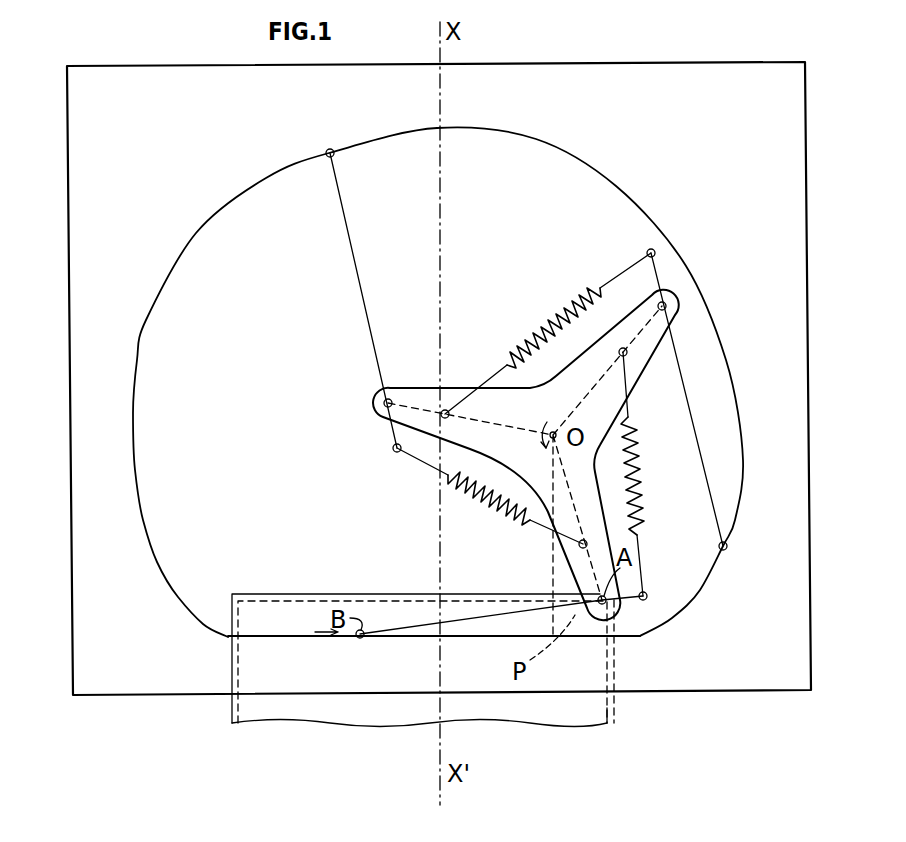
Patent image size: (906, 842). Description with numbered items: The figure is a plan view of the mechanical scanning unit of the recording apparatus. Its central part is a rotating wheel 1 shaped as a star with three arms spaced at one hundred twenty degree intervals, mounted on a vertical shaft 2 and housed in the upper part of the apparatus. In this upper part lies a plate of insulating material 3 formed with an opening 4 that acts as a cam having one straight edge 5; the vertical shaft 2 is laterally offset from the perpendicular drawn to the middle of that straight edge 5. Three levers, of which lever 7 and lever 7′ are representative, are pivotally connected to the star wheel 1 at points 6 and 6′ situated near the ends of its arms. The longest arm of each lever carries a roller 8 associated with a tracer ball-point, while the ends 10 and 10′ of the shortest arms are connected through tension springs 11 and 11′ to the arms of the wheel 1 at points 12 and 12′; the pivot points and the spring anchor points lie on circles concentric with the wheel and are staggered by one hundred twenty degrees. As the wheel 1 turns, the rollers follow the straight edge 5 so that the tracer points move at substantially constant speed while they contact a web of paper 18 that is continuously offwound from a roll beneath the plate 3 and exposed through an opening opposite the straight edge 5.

The rotating wheel 1 is at (615, 400).
The vertical shaft 2 is at (552, 428).
The plate of insulating material 3 is at (148, 670).
The opening 4 is at (150, 485).
The straight edge 5 is at (265, 638).
The pivot point 6 is at (596, 618).
The pivot point 6′ is at (384, 408).
The lever 7 is at (474, 626).
The lever 7′ is at (360, 270).
The roller 8 is at (327, 158).
The end of the shortest arm 10 is at (662, 596).
The end of the shortest arm 10′ is at (398, 452).
The tension spring 11 is at (642, 472).
The tension spring 11′ is at (475, 495).
The spring attachment point 12 is at (580, 547).
The spring attachment point 12′ is at (447, 410).
The web of paper 18 is at (613, 708).